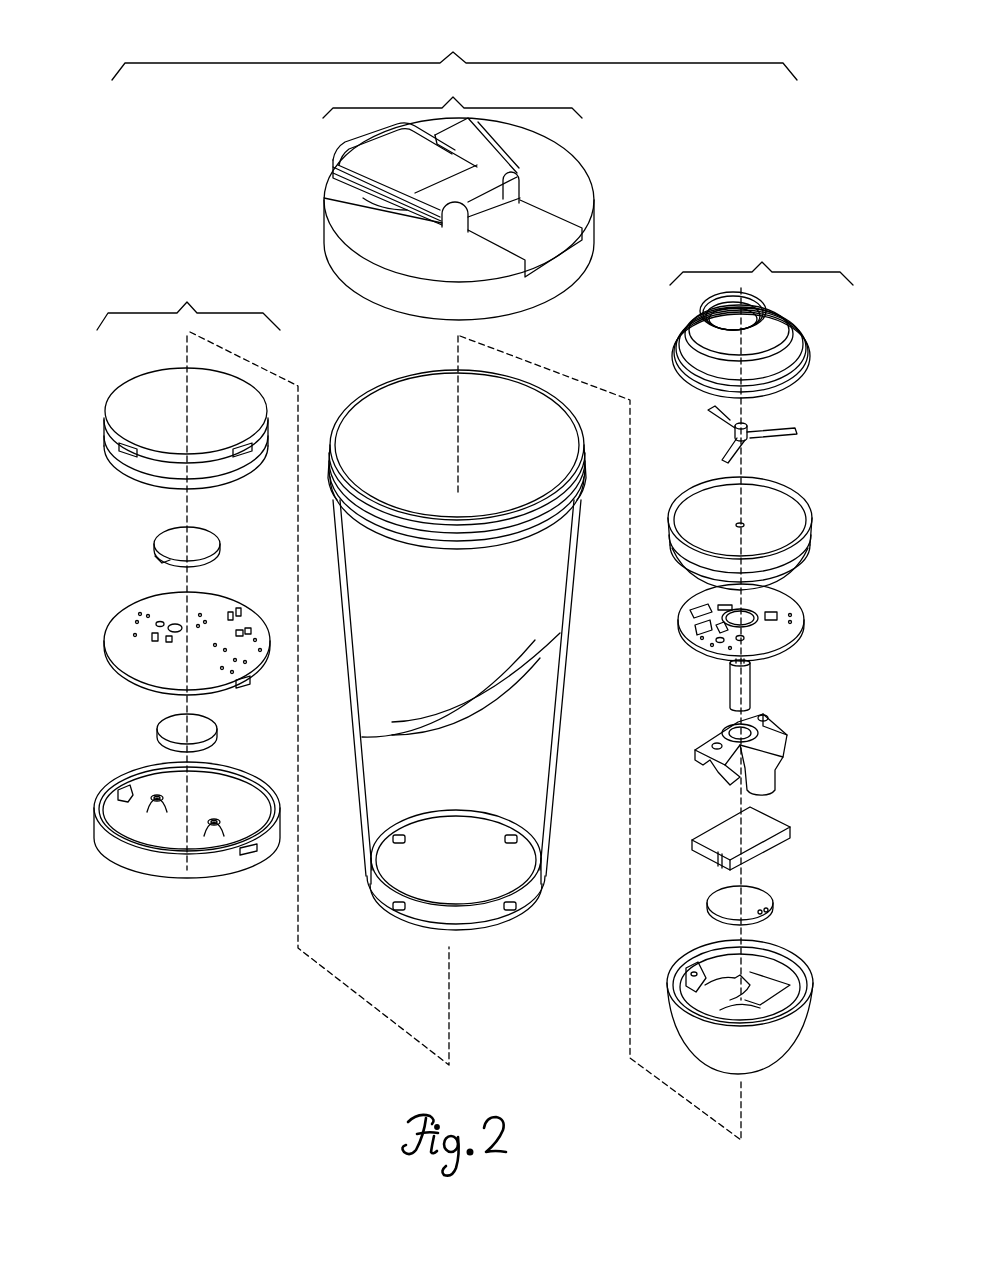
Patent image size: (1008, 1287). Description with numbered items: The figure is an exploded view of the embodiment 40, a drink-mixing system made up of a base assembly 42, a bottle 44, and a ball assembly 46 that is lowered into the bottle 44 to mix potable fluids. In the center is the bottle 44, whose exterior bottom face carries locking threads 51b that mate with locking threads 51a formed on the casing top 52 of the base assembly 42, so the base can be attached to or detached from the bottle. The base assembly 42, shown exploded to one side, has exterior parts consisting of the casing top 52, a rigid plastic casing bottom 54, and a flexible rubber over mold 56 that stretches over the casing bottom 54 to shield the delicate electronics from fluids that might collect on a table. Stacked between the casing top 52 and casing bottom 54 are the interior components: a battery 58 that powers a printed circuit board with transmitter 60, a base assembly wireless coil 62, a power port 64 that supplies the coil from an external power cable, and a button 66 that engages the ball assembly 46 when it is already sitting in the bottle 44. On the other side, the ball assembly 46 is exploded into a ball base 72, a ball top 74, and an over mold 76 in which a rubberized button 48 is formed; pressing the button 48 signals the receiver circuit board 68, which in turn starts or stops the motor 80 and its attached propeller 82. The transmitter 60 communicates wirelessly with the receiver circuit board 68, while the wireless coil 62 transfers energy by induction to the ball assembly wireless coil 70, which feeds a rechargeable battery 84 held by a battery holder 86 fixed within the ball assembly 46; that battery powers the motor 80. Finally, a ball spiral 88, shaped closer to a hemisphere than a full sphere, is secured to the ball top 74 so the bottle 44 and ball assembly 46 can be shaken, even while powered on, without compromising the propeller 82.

The embodiment 40 is at (454, 51).
The base assembly 42 is at (188, 301).
The bottle 44 is at (458, 193).
The ball assembly 46 is at (761, 257).
The button 48 is at (695, 968).
The locking threads 51a is at (230, 455).
The locking threads 51b is at (508, 912).
The casing top 52 is at (118, 385).
The casing bottom 54 is at (105, 800).
The over mold 56 is at (105, 838).
The battery 58 is at (155, 722).
The printed circuit board with transmitter 60 is at (120, 610).
The base assembly wireless coil 62 is at (160, 535).
The power port 64 is at (250, 852).
The button 66 is at (125, 790).
The receiver circuit board 68 is at (790, 598).
The ball assembly wireless coil 70 is at (762, 896).
The ball base 72 is at (805, 968).
The ball top 74 is at (815, 533).
The over mold 76 is at (790, 1033).
The motor 80 is at (745, 685).
The propeller 82 is at (760, 432).
The rechargeable battery 84 is at (770, 818).
The battery holder 86 is at (775, 738).
The ball spiral 88 is at (805, 332).